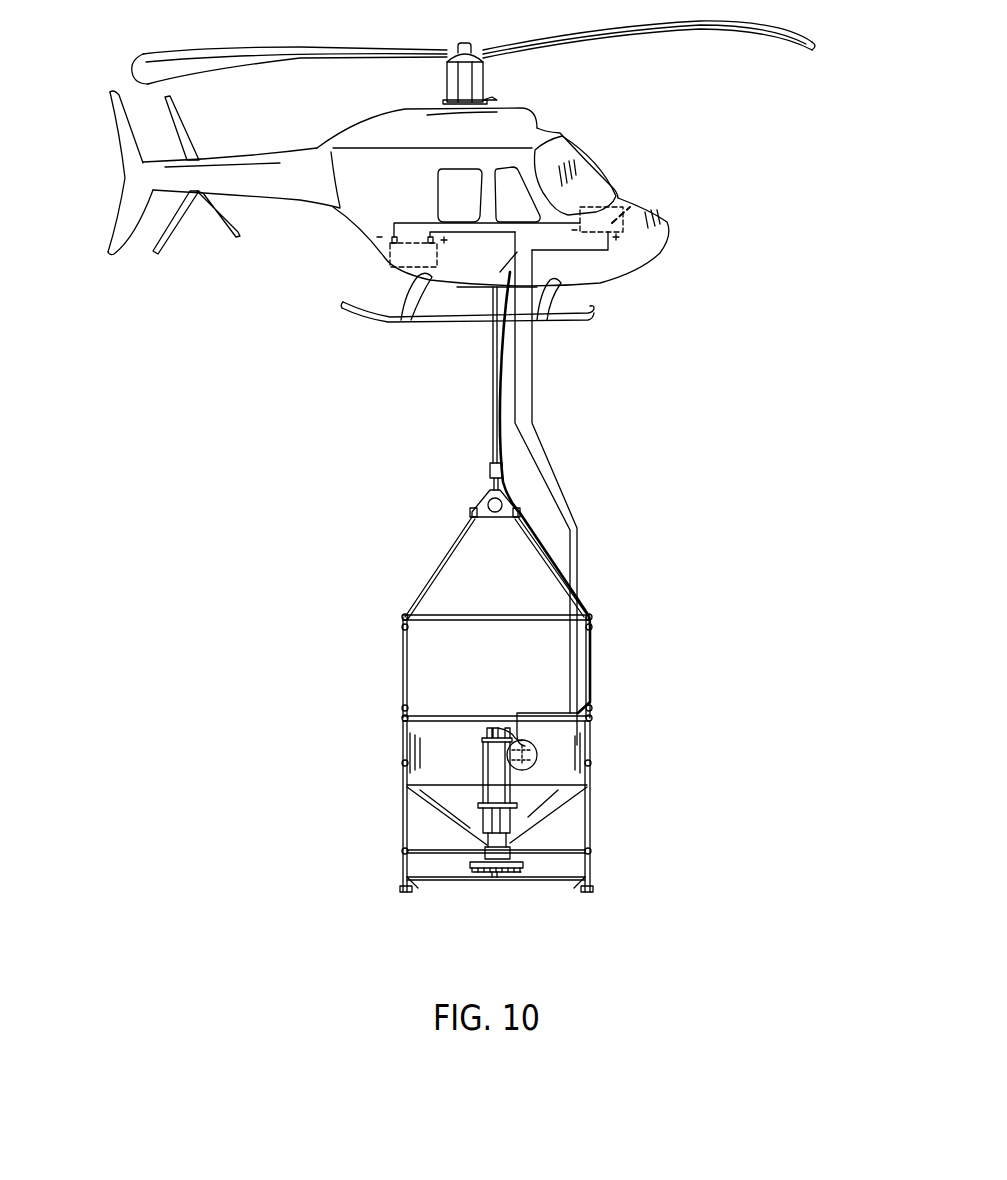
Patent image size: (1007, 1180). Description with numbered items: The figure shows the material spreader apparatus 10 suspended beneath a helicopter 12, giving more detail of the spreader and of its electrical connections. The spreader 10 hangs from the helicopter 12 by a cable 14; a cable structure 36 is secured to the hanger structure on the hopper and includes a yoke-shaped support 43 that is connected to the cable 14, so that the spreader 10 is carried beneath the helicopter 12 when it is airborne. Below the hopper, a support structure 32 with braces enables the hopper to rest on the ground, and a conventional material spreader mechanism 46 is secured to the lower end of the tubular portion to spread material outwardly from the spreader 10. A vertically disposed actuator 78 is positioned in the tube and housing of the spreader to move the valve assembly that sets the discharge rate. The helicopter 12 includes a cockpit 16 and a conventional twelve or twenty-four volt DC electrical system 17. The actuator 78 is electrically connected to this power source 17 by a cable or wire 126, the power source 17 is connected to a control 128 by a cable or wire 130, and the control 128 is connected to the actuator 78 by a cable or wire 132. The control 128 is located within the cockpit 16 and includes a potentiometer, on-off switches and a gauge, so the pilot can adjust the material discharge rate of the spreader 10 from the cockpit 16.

The material spreader apparatus 10 is at (362, 782).
The helicopter 12 is at (613, 140).
The cable 14 is at (493, 330).
The cockpit 16 is at (564, 151).
The electrical system 17 is at (400, 249).
The support structure 32 is at (390, 817).
The cable structure 36 is at (396, 655).
The yoke-shaped support 43 is at (441, 567).
The material spreader mechanism 46 is at (528, 875).
The actuator 78 is at (472, 765).
The cable or wire 126 is at (517, 252).
The control 128 is at (630, 207).
The cable or wire 130 is at (582, 207).
The cable or wire 132 is at (538, 367).